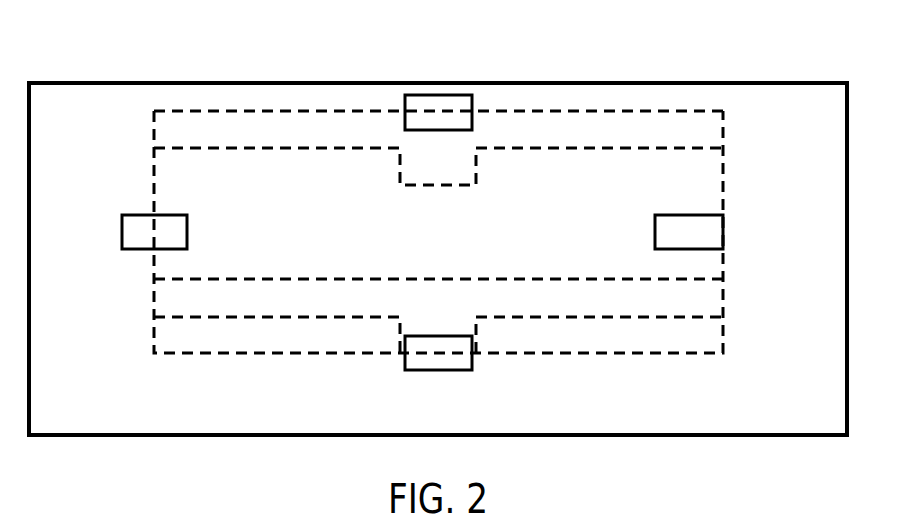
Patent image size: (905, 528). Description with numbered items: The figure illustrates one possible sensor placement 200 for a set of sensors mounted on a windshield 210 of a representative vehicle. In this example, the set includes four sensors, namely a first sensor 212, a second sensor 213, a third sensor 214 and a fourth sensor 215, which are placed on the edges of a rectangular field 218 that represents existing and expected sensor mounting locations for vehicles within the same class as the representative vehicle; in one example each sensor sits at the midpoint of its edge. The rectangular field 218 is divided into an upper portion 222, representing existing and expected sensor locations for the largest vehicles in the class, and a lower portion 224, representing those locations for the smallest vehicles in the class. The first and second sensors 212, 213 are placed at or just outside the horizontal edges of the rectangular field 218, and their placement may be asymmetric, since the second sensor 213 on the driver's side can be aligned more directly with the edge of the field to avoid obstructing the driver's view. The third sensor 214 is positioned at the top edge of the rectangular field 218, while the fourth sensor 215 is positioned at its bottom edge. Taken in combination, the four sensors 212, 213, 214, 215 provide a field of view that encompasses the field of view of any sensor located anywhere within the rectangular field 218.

The sensor placement 200 is at (745, 26).
The windshield 210 is at (438, 259).
The first sensor 212 is at (187, 227).
The second sensor 213 is at (655, 243).
The third sensor 214 is at (472, 102).
The fourth sensor 215 is at (440, 370).
The rectangular field 218 is at (723, 176).
The upper portion 222 is at (438, 148).
The lower portion 224 is at (438, 316).